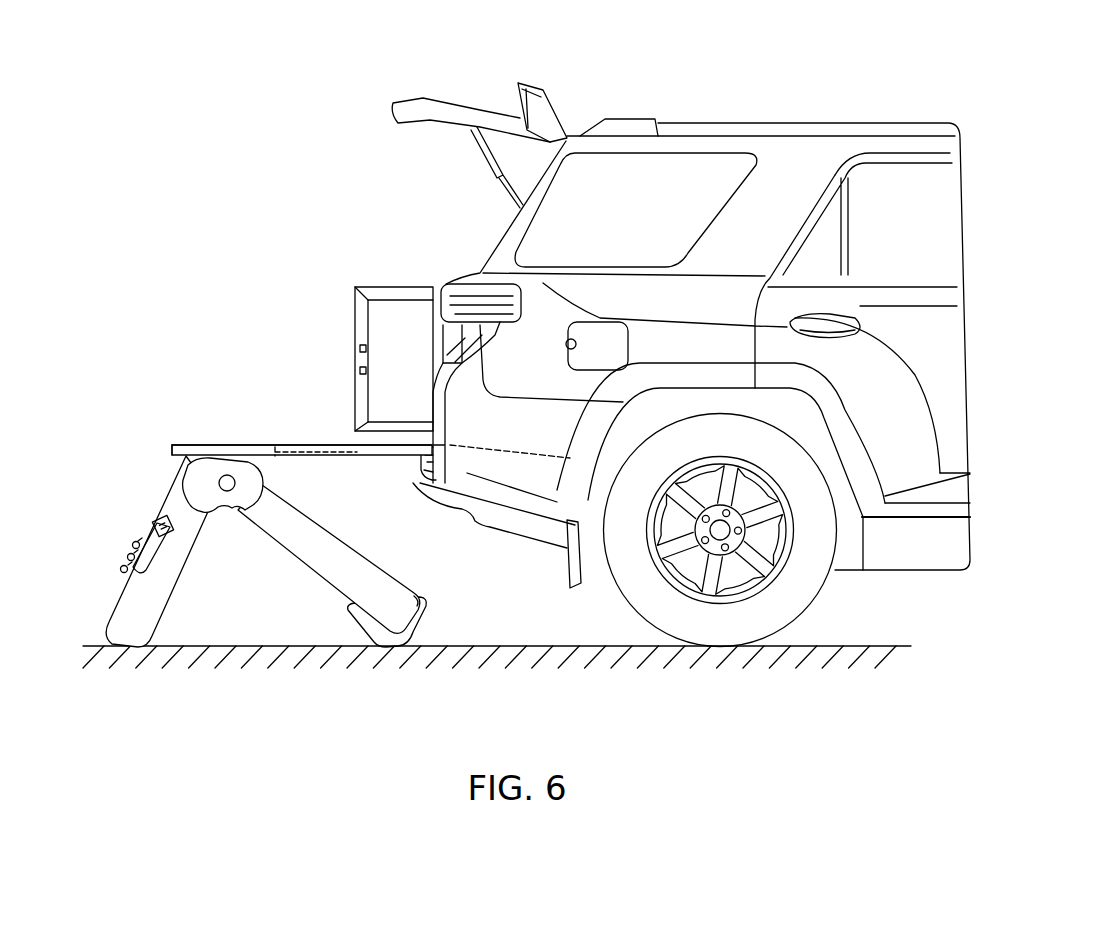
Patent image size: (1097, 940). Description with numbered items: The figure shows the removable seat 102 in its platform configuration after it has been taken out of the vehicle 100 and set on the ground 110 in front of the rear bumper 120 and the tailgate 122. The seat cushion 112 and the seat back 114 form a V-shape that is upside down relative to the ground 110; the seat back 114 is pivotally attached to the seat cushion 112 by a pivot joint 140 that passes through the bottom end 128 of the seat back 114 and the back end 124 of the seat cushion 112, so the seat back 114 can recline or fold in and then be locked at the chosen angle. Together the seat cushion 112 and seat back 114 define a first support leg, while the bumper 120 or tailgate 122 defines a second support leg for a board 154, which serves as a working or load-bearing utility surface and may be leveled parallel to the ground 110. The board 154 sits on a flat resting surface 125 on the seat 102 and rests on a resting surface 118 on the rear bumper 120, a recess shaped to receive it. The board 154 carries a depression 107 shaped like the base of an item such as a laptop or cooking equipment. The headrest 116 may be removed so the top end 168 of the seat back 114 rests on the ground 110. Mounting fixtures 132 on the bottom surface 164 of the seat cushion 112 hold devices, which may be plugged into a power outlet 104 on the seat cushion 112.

The vehicle 100 is at (649, 325).
The seat 102 is at (123, 435).
The power outlet 104 is at (172, 533).
The depression 107 is at (278, 444).
The ground 110 is at (475, 647).
The seat cushion 112 is at (140, 551).
The seat back 114 is at (311, 565).
The headrest 116 is at (408, 627).
The resting surface 118 is at (427, 462).
The rear bumper 120 is at (425, 482).
The tailgate 122 is at (402, 288).
The back end 124 is at (245, 424).
The resting surface 125 is at (183, 462).
The bottom end 128 is at (181, 452).
The mounting fixtures 132 is at (122, 572).
The pivot joint 140 is at (225, 476).
The board 154 is at (173, 445).
The bottom surface 164 is at (113, 610).
The top end 168 is at (420, 603).